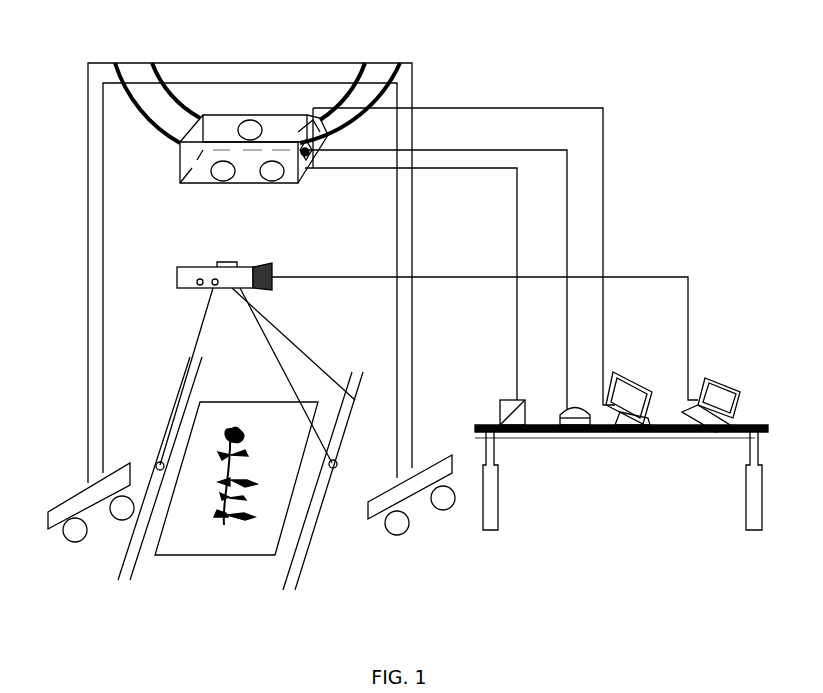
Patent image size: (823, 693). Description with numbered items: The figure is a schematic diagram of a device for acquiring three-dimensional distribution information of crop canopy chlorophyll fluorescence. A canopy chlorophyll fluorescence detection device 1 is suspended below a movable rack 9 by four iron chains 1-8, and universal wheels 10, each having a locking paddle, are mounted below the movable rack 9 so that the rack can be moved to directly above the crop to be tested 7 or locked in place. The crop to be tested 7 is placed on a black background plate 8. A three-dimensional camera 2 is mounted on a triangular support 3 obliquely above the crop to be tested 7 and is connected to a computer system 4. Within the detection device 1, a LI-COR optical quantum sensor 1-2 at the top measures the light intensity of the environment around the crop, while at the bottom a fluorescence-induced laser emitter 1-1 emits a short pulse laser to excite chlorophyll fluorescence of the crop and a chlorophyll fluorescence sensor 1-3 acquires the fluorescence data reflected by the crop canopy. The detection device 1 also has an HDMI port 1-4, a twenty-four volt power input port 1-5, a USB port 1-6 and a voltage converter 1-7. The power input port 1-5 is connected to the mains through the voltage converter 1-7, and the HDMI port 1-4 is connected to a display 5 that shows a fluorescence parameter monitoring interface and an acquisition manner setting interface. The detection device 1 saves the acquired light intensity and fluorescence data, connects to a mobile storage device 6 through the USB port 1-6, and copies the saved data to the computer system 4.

The canopy chlorophyll fluorescence detection device 1 is at (203, 128).
The fluorescence-induced laser emitter 1-1 is at (272, 183).
The LI-COR optical quantum sensor 1-2 is at (249, 118).
The chlorophyll fluorescence sensor 1-3 is at (223, 183).
The HDMI port 1-4 is at (322, 132).
The 24V power input port 1-5 is at (306, 140).
The USB3.0 port 1-6 is at (312, 152).
The voltage converter 1-7 is at (500, 413).
The iron chain 1-8 is at (205, 100).
The 3D camera 2 is at (177, 275).
The triangular support 3 is at (207, 303).
The computer system 4 is at (710, 378).
The display 5 is at (633, 370).
The mobile storage device 6 is at (560, 418).
The crop to be tested 7 is at (224, 527).
The black background plate 8 is at (171, 558).
The movable rack 9 is at (88, 337).
The universal wheel 10 is at (63, 530).